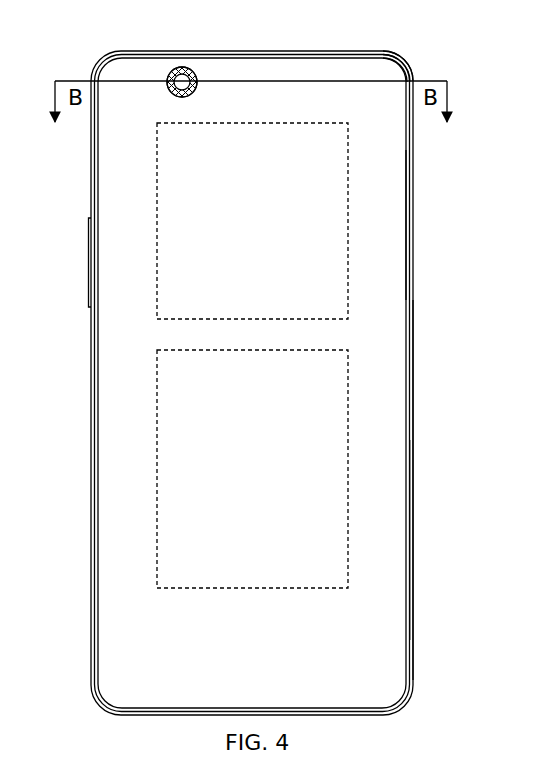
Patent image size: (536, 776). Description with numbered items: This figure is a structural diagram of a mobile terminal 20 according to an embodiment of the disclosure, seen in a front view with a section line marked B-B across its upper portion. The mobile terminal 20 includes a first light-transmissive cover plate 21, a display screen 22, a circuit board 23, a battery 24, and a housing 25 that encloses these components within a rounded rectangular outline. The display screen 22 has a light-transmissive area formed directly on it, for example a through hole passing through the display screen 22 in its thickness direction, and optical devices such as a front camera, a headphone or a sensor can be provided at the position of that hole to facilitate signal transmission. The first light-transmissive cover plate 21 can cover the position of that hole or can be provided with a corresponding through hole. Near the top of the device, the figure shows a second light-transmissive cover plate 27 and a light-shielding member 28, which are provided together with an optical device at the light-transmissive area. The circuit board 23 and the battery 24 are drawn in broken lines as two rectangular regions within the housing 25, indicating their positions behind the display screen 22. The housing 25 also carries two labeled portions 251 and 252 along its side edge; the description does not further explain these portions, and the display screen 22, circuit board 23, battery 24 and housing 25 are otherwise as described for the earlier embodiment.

The mobile terminal 20 is at (88, 58).
The first light-transmissive cover plate 21 is at (409, 456).
The display screen 22 is at (407, 258).
The circuit board 23 is at (351, 229).
The battery 24 is at (352, 414).
The housing 25 is at (403, 55).
The first frame portion 251 is at (409, 539).
The second frame portion 252 is at (414, 624).
The second light-transmissive cover plate 27 is at (184, 74).
The light-shielding member 28 is at (198, 76).